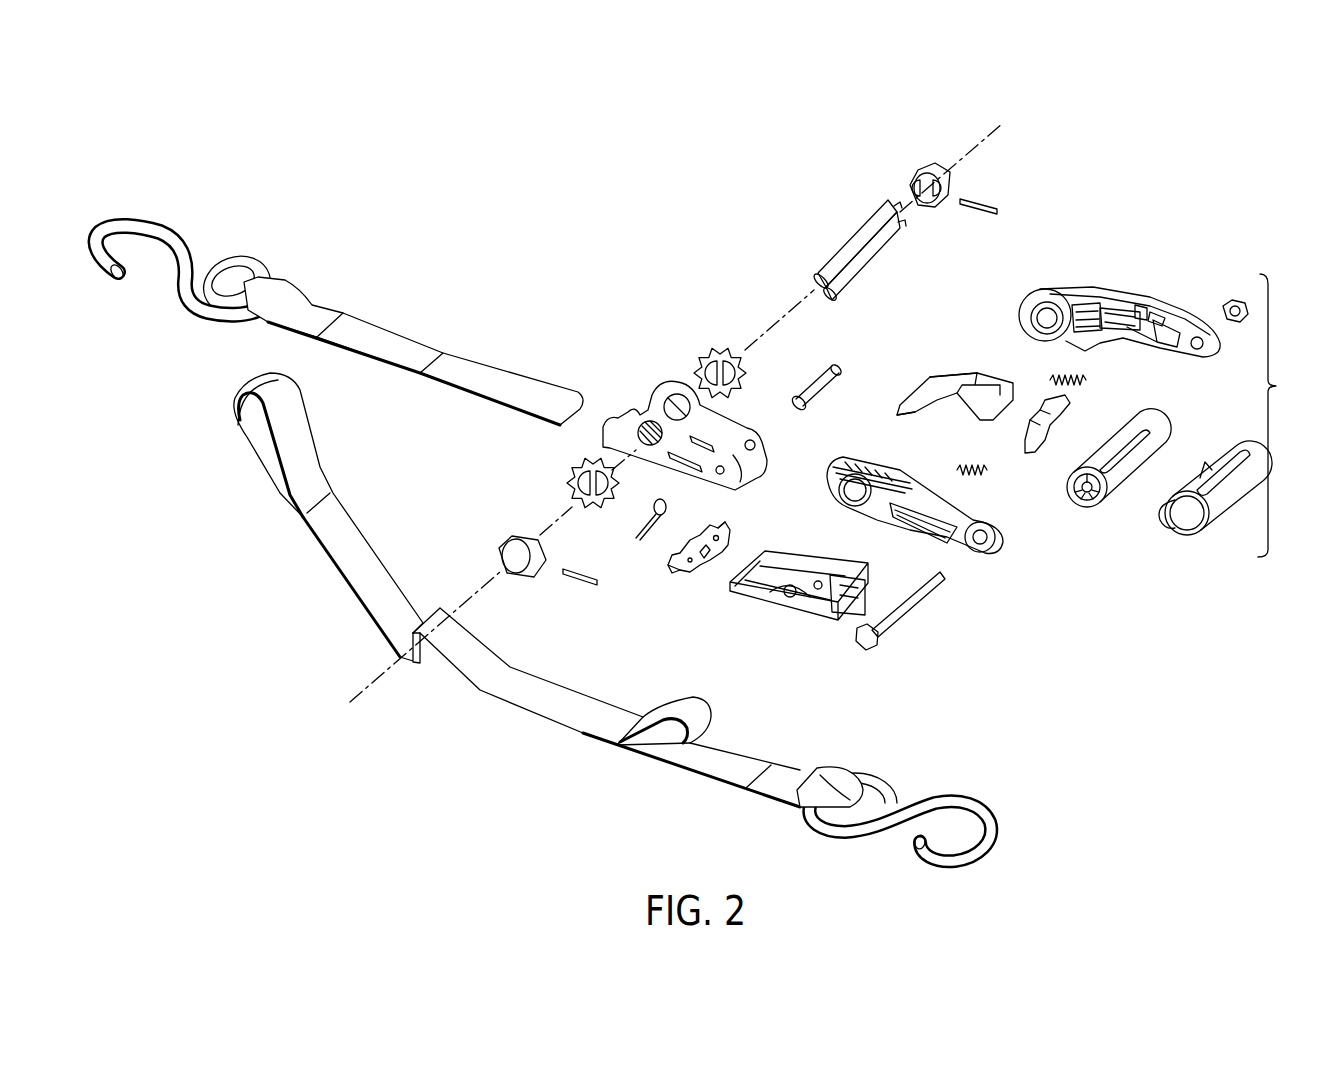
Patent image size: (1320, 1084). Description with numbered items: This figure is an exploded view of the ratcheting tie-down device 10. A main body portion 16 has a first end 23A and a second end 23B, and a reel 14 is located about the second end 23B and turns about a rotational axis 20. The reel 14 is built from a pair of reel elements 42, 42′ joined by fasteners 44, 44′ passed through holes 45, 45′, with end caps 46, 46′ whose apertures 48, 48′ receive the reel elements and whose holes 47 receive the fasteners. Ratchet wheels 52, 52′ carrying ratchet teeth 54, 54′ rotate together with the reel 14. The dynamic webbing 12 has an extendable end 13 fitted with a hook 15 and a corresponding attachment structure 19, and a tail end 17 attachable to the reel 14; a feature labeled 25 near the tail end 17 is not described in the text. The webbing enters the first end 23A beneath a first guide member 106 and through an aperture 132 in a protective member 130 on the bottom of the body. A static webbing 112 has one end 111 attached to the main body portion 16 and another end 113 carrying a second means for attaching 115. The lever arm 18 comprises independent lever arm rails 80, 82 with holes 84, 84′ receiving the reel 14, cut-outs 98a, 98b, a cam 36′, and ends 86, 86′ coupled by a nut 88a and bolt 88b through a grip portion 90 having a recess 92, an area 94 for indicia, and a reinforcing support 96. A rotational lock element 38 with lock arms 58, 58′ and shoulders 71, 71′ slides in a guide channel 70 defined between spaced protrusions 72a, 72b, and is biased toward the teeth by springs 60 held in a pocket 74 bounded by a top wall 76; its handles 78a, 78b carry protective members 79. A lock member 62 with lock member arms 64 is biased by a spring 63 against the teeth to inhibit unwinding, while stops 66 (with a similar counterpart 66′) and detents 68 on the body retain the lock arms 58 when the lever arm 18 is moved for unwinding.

The ratcheting tie-down device 10 is at (597, 212).
The dynamic webbing 12 is at (724, 737).
The extendable end 13 is at (738, 750).
The reel 14 is at (797, 252).
The means for attaching 15 is at (990, 836).
The main body portion 16 is at (742, 433).
The tail end 17 is at (328, 518).
The lever arm 18 is at (1282, 415).
The corresponding attachment structure 19 is at (690, 700).
The rotational axis 20 is at (1003, 135).
The first end 23A is at (798, 452).
The second end 23B is at (595, 440).
The strap loop 25 is at (313, 437).
The cam 36′ is at (1084, 319).
The rotational lock element 38 is at (950, 382).
The reel element 42 is at (895, 266).
The reel element 42′ is at (852, 281).
The fastener 44 is at (573, 578).
The fastener 44′ is at (998, 207).
The hole 45 is at (902, 222).
The hole 45′ is at (900, 248).
The end cap 46 is at (507, 562).
The end cap 46′ is at (920, 163).
The hole 47 is at (958, 184).
The aperture 48 is at (938, 202).
The aperture 48′ is at (902, 192).
The ratchet wheel 52 is at (574, 487).
The ratchet wheel 52′ is at (712, 362).
The ratchet teeth 54 is at (610, 522).
The ratchet teeth 54′ is at (736, 346).
The rotational lock arm 58 is at (908, 407).
The rotational lock arm 58′ is at (938, 380).
The spring 60 is at (1088, 384).
The lock member 62 is at (678, 551).
The spring 63 is at (653, 500).
The lock member arm 64 is at (703, 527).
The stop 66 is at (620, 406).
The bracket opening 66′ is at (661, 380).
The detent 68 is at (601, 410).
The guide channel 70 is at (1095, 345).
The shoulder 71 is at (978, 387).
The shoulder 71′ is at (990, 380).
The spaced protrusion 72a is at (1077, 320).
The spaced protrusion 72b is at (1100, 325).
The pocket 74 is at (1125, 330).
The top wall 76 is at (1140, 312).
The handle 78a is at (1015, 378).
The handle 78b is at (1010, 424).
The protective member 79 is at (1036, 429).
The independent lever arm rail 80 is at (896, 523).
The independent lever arm rail 82 is at (1158, 310).
The hole 84 is at (854, 491).
The hole 84′ is at (1046, 308).
The end 86 is at (990, 572).
The end 86′ is at (1230, 357).
The nut 88a is at (913, 603).
The bolt 88b is at (1235, 300).
The grip portion 90 is at (1215, 480).
The recess 92 is at (1195, 473).
The area for indicia 94 is at (1220, 472).
The reinforcing support 96 is at (1116, 480).
The cut-out 98a is at (950, 520).
The cut-out 98b is at (882, 468).
The first guide member 106 is at (816, 390).
The one end 111 is at (413, 329).
The static webbing 112 is at (393, 318).
The other end 113 is at (312, 307).
The second means for attaching 115 is at (153, 225).
The protective member 130 is at (797, 622).
The aperture 132 is at (845, 602).